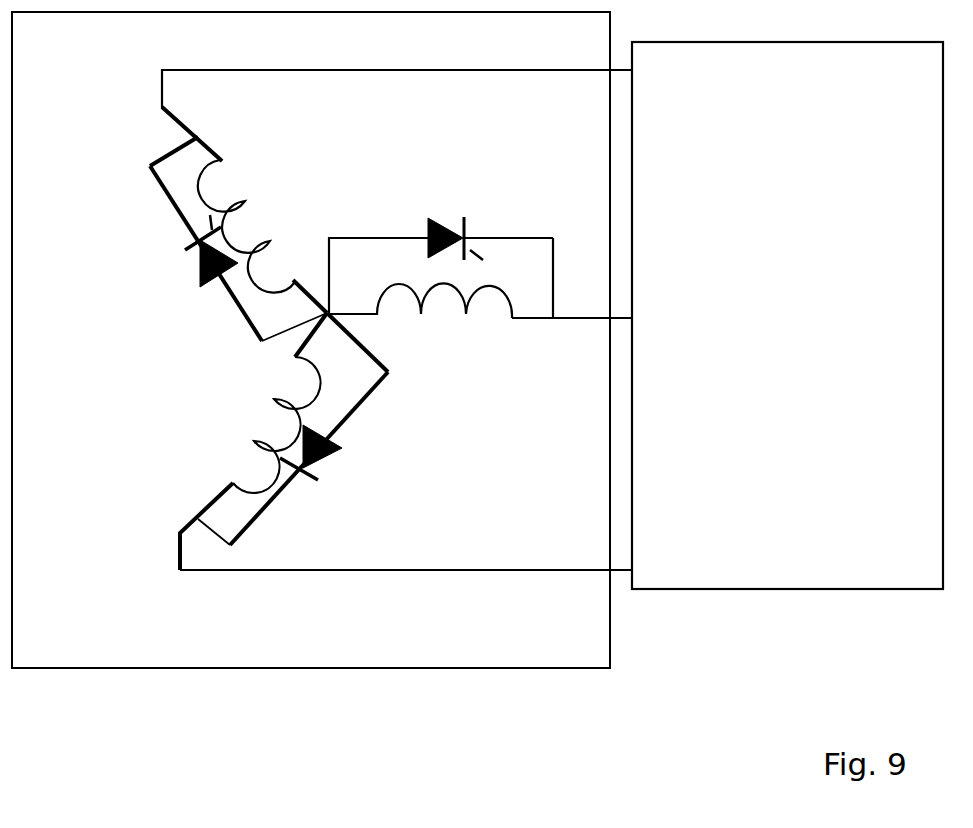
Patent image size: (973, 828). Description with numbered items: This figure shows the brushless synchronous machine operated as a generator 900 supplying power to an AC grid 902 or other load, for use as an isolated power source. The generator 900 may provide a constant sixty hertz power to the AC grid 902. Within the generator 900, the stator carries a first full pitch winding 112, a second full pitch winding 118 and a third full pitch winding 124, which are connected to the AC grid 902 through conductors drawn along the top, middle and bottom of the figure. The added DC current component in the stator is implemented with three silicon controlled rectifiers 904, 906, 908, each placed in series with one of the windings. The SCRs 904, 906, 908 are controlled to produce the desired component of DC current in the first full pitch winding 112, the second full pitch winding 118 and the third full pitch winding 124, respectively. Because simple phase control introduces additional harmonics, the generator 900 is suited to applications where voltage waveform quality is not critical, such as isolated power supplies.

The first full pitch winding 112 is at (357, 72).
The second full pitch winding 118 is at (573, 317).
The third full pitch winding 124 is at (485, 565).
The generator 900 is at (75, 649).
The AC grid 902 is at (905, 552).
The silicon controlled rectifier 904 is at (216, 279).
The silicon controlled rectifier 906 is at (433, 215).
The silicon controlled rectifier 908 is at (327, 460).